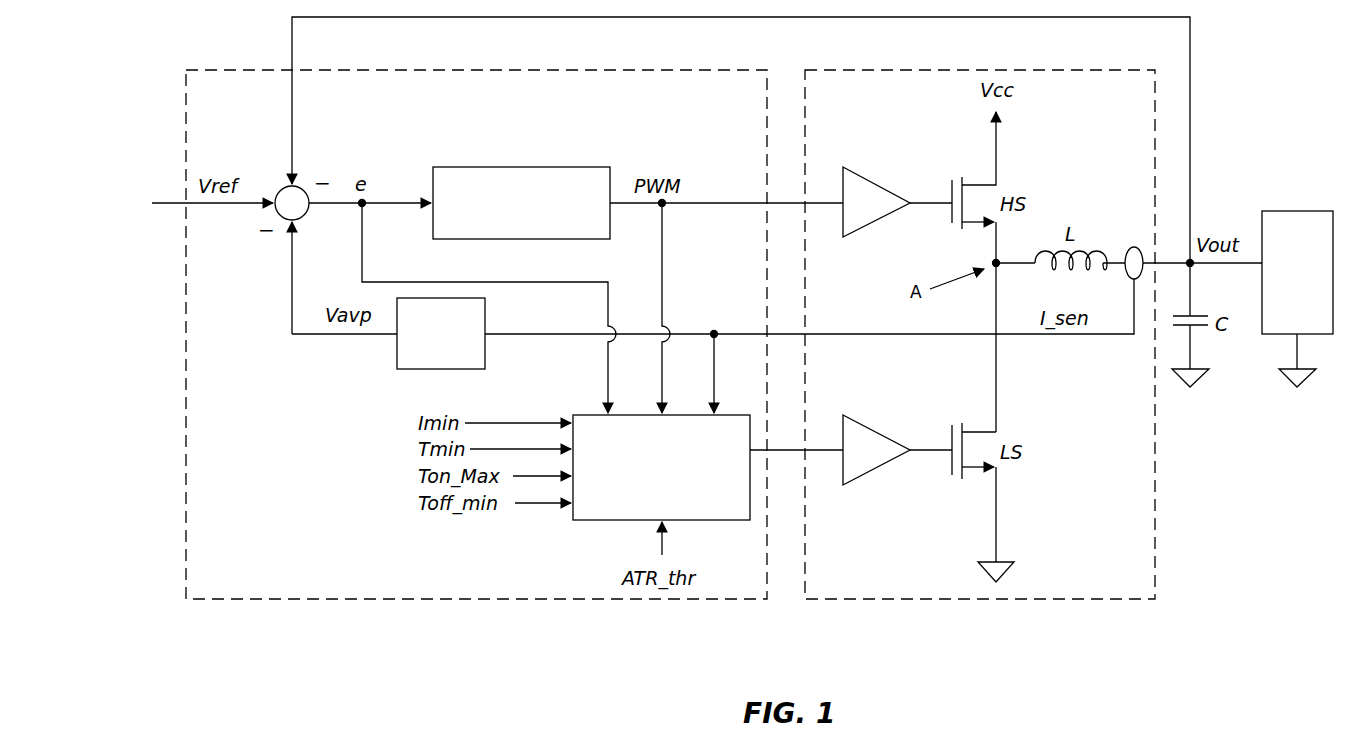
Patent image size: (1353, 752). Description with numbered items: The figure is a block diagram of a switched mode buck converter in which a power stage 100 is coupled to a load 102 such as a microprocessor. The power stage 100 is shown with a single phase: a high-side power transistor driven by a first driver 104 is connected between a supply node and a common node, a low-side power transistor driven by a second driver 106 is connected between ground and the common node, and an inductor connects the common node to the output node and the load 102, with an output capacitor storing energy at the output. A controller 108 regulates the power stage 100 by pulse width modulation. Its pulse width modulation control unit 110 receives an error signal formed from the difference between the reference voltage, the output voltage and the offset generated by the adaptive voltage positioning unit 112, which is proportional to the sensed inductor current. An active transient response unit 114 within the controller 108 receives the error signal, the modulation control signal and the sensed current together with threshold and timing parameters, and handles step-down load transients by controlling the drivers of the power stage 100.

The power stage 100 is at (1087, 599).
The load 102 is at (1297, 272).
The first driver 104 is at (870, 178).
The second driver 106 is at (870, 425).
The controller 108 is at (275, 599).
The PWM control unit 110 is at (521, 203).
The AVP unit 112 is at (441, 333).
The ATR unit 114 is at (661, 467).